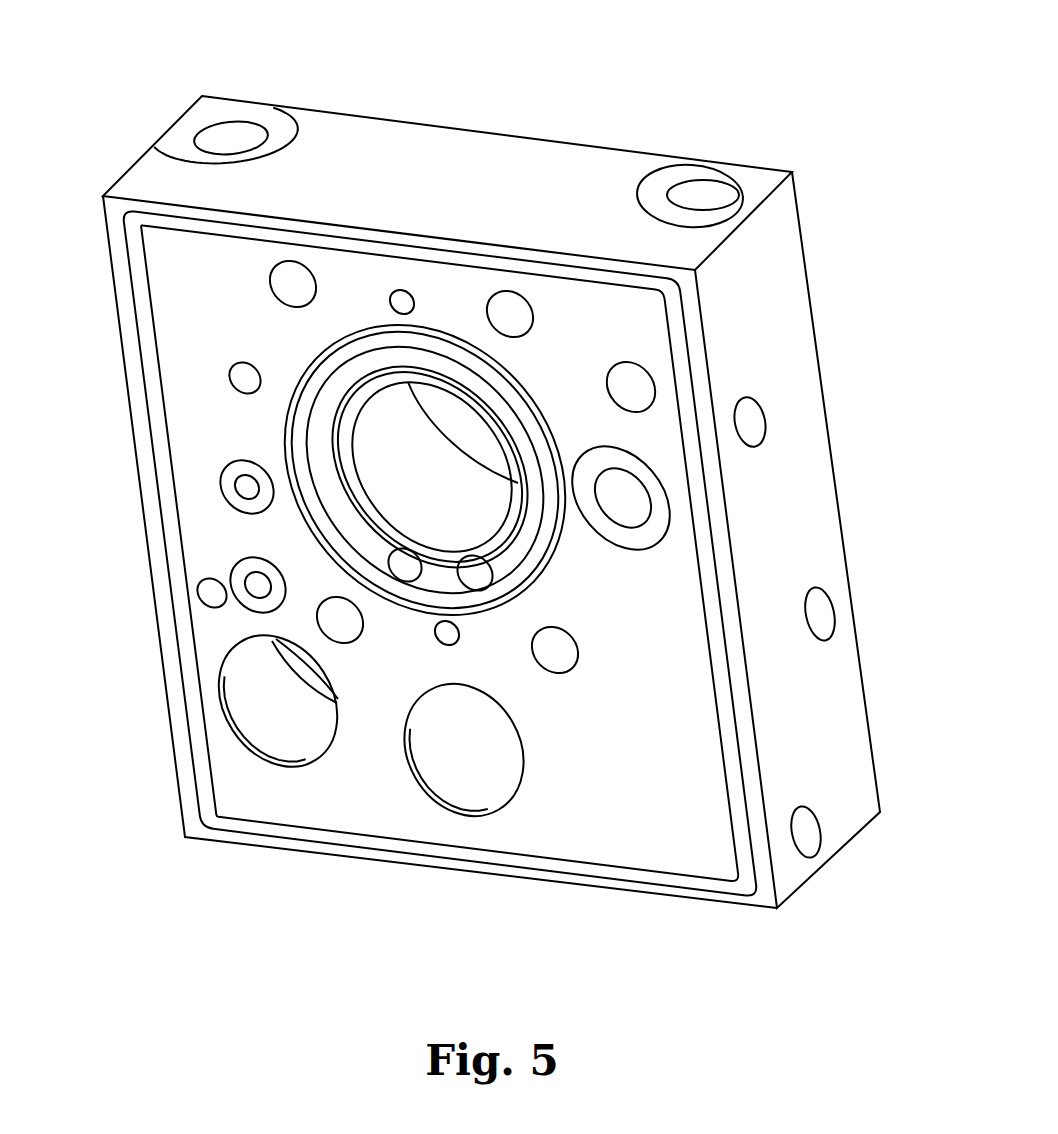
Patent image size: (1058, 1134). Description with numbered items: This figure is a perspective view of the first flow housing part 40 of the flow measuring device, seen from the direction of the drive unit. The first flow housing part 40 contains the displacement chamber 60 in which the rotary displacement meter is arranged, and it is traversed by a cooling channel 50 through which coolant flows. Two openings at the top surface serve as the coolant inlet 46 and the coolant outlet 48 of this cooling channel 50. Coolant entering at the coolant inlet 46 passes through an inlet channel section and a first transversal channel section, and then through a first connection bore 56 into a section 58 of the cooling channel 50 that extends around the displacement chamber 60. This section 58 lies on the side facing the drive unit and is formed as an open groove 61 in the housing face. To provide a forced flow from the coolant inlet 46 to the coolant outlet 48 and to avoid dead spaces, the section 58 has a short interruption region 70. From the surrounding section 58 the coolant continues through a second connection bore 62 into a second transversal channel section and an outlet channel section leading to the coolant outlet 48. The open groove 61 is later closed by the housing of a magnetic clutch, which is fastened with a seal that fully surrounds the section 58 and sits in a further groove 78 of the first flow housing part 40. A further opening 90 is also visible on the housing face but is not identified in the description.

The first flow housing part 40 is at (889, 411).
The coolant inlet 46 is at (702, 202).
The coolant outlet 48 is at (227, 140).
The cooling channel 50 is at (622, 497).
The first connection bore 56 is at (475, 573).
The section of the cooling channel 58 is at (527, 483).
The displacement chamber 60 is at (392, 458).
The open groove 61 is at (488, 402).
The second connection bore 62 is at (407, 562).
The short interruption region 70 is at (441, 580).
The further groove 78 is at (347, 333).
The port 90 is at (631, 387).